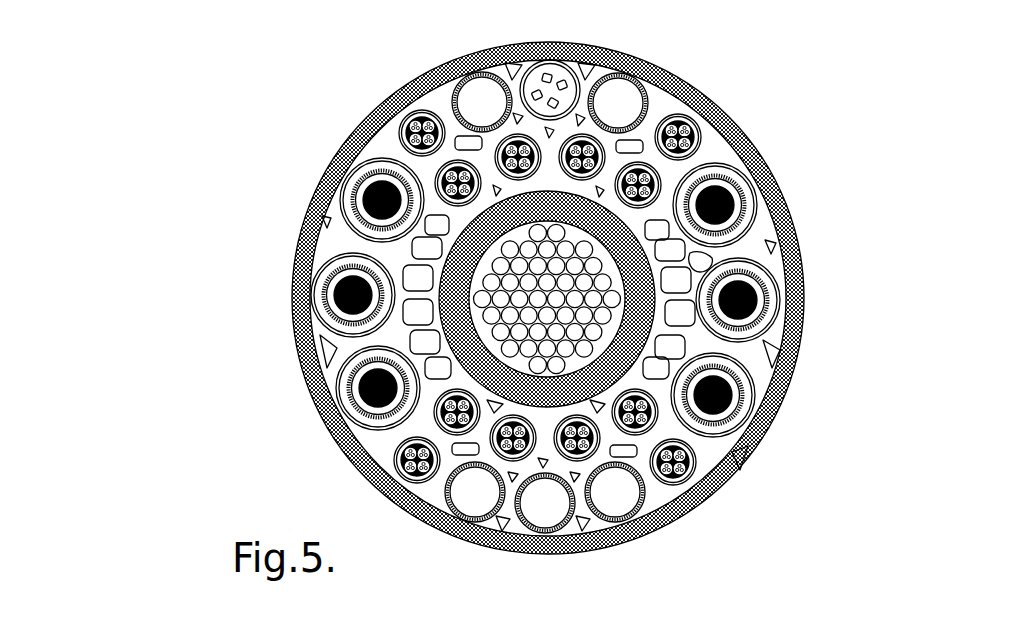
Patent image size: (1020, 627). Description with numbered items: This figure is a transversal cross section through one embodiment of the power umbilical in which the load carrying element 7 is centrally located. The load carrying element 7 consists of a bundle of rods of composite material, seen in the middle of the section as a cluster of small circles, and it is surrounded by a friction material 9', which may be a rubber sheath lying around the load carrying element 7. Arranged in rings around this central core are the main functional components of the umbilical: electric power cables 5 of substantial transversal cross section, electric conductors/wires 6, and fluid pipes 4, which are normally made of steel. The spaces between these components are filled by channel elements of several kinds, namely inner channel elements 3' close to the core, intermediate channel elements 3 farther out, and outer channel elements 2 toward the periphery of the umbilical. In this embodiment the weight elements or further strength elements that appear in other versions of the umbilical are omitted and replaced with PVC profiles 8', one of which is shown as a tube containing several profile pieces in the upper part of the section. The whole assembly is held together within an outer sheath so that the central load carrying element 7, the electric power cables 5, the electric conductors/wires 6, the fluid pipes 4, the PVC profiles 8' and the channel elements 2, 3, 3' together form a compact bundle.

The outer channel element 2 is at (735, 440).
The intermediate channel element 3 is at (680, 504).
The inner channel element 3' is at (773, 216).
The fluid pipe 4 is at (640, 88).
The electric power cable 5 is at (338, 295).
The electric conductor/wire 6 is at (405, 482).
The load carrying element 7 is at (566, 298).
The PVC profile 8' is at (583, 60).
The friction material 9' is at (654, 299).